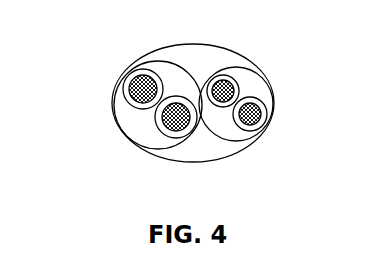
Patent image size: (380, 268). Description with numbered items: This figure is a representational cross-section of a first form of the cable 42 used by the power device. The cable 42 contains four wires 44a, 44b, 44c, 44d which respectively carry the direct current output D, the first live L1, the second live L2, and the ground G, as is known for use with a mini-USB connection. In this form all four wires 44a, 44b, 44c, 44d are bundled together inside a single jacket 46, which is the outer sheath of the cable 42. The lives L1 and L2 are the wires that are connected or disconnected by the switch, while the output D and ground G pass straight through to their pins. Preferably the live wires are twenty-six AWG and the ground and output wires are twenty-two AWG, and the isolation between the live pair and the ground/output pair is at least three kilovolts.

The cable 42 is at (114, 128).
The jacket 46 is at (268, 77).
The wire 44a is at (145, 73).
The wire 44b is at (223, 88).
The wire 44c is at (244, 131).
The wire 44d is at (173, 133).